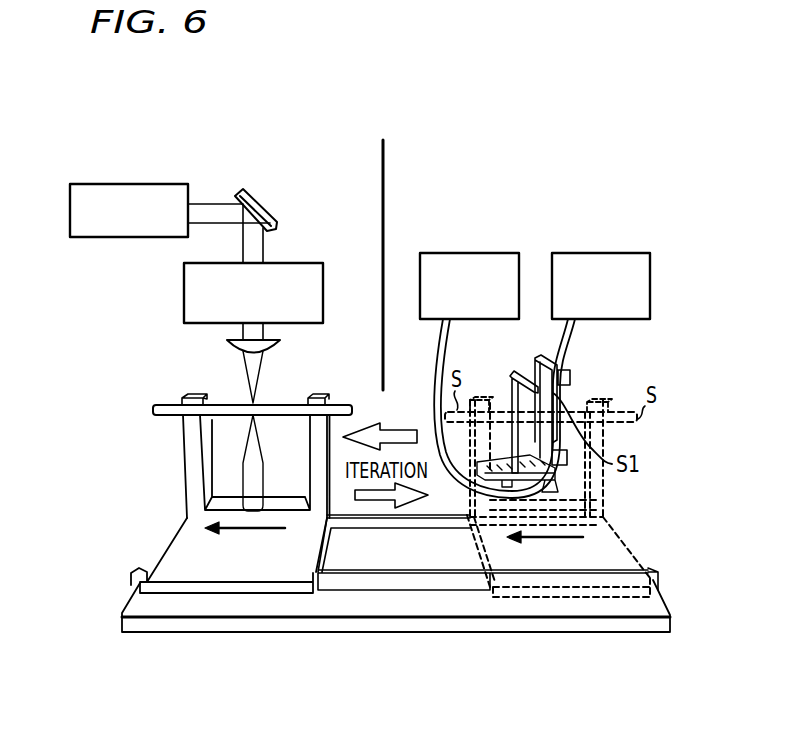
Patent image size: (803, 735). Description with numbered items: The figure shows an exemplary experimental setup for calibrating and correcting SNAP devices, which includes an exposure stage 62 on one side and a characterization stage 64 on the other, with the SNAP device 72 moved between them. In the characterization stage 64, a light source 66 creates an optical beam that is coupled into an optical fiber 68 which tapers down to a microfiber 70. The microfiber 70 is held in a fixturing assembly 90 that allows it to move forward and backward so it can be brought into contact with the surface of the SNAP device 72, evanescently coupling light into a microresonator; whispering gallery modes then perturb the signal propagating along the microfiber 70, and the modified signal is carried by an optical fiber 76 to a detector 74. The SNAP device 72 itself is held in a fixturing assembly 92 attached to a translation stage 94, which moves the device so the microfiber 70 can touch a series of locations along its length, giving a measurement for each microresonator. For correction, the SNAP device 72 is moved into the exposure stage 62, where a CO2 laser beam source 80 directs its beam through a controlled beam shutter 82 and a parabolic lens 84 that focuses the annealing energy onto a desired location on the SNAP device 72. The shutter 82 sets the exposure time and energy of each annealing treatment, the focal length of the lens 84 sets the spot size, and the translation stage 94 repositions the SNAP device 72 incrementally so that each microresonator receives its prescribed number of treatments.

The exposure stage 62 is at (272, 122).
The characterization stage 64 is at (648, 125).
The CO2 laser beam source 80 is at (113, 184).
The controlled beam shutter 82 is at (300, 262).
The parabolic lens 84 is at (227, 345).
The SNAP device 72 is at (650, 446).
The fixturing assembly 92 is at (187, 465).
The translation stage 94 is at (171, 552).
The detector 74 is at (480, 252).
The light source 66 is at (612, 252).
The optical fiber 76 is at (441, 346).
The optical fiber 68 is at (561, 346).
The fixturing assembly 90 is at (508, 371).
The microfiber 70 is at (561, 404).